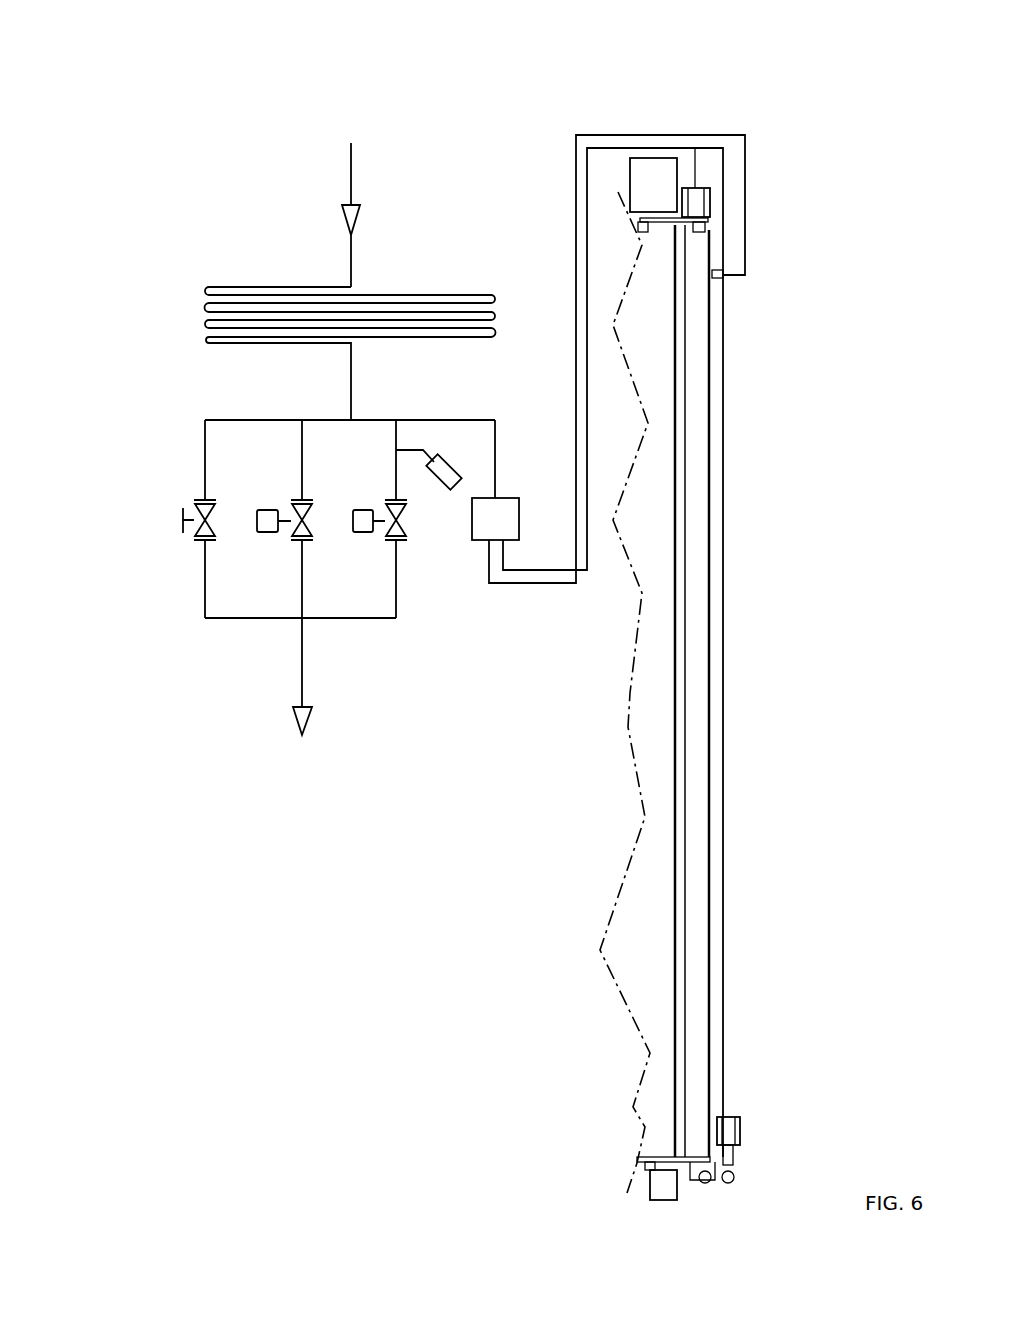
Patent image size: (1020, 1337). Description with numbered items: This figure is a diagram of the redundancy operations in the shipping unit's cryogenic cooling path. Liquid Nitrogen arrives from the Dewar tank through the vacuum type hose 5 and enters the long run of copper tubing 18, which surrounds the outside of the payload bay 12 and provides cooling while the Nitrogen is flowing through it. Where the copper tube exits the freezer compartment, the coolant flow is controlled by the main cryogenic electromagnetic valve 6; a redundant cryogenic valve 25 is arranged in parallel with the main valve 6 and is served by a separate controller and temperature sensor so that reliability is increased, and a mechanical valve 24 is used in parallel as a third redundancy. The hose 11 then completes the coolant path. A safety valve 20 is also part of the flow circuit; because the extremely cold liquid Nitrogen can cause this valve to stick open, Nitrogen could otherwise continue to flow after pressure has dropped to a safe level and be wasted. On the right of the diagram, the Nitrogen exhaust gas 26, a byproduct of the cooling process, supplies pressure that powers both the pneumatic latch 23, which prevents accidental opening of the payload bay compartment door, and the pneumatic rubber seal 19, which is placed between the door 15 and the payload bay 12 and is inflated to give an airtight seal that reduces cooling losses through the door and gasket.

The vacuum type hose 5 is at (356, 163).
The copper tubing 18 is at (236, 285).
The mechanical valve 24 is at (181, 522).
The cryogenic electromagnetic valve 6 is at (258, 532).
The redundant cryogenic valve 25 is at (363, 537).
The hose 11 is at (295, 727).
The safety valve 20 is at (455, 458).
The Nitrogen exhaust gas 26 is at (477, 543).
The pneumatic latch 23 is at (714, 200).
The door 15 is at (696, 372).
The pneumatic rubber seal 19 is at (684, 487).
The payload bay 12 is at (647, 977).